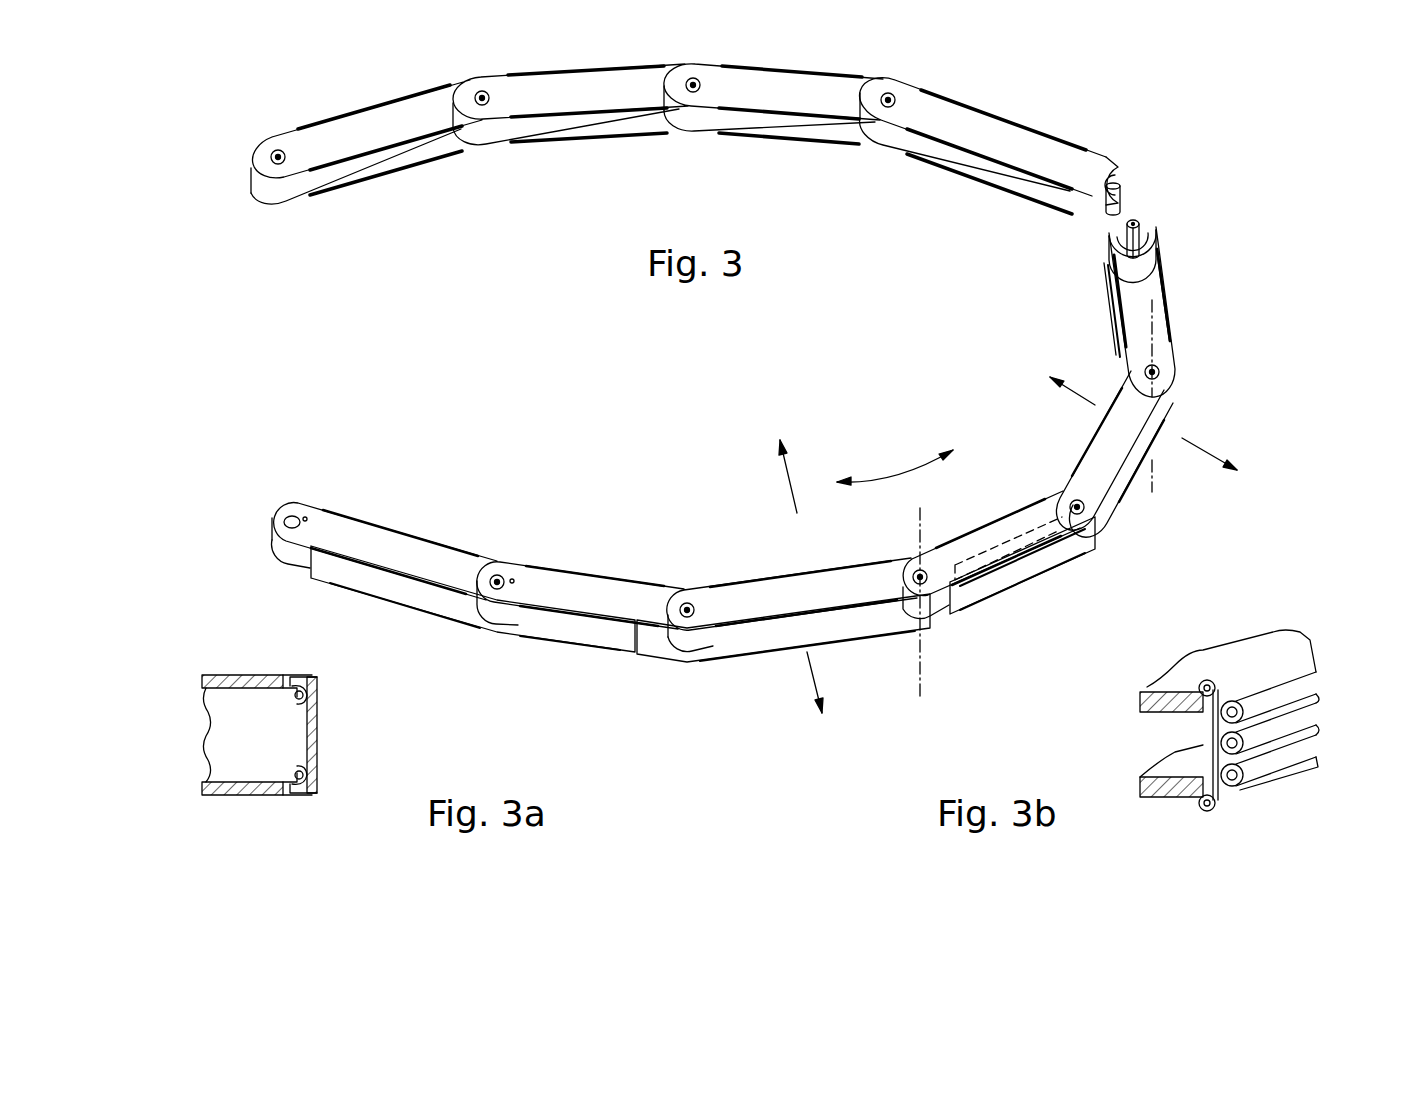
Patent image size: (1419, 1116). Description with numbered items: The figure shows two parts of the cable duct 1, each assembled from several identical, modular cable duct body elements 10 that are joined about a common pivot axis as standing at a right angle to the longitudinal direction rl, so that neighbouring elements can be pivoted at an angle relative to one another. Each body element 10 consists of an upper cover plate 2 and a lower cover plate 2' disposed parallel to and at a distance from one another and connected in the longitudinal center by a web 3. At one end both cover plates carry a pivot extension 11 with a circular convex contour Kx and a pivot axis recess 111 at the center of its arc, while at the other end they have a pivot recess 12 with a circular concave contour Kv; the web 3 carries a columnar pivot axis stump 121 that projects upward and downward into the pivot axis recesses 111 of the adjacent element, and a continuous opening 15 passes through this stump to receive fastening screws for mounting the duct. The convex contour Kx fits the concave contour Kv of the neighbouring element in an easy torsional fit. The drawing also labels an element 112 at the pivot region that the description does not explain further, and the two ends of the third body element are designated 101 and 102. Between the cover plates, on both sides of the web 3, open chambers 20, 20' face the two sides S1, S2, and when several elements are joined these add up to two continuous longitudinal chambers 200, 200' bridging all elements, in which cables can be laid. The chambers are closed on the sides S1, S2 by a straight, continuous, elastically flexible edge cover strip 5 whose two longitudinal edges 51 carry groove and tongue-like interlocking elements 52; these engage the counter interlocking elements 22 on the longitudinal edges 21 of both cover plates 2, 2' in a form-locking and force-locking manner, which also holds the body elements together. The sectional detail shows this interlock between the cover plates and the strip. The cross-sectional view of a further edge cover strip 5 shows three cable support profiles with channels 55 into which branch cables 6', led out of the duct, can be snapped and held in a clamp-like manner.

In FIG. 3, the cable duct 1 is at (588, 152).
In FIG. 3, the upper cover plate 2 is at (993, 137).
In FIG. 3A, the upper cover plate 2 is at (257, 658).
In FIG. 3B, the upper cover plate 2 is at (1137, 692).
In FIG. 3, the lower cover plate 2' is at (853, 440).
In FIG. 3A, the lower cover plate 2' is at (254, 810).
In FIG. 3, the web 3 is at (1140, 252).
In FIG. 3, the edge cover strip 5 is at (458, 602).
In FIG. 3A, the edge cover strip 5 is at (317, 738).
In FIG. 3B, the edge cover strip 5 is at (1237, 788).
In FIG. 3B, the branch cable 6' is at (1258, 704).
In FIG. 3, the cable duct body element 10 is at (785, 97).
In FIG. 3A, the cable duct body element 10 is at (215, 682).
In FIG. 3, the pivot extension 11 is at (877, 92).
In FIG. 3, the pivot recess 12 is at (1100, 168).
In FIG. 3, the continuous opening 15 is at (307, 520).
In FIG. 3, the chamber 20 is at (960, 545).
In FIG. 3, the chamber 20' is at (1090, 309).
In FIG. 3, the longitudinal edge 21 is at (933, 565).
In FIG. 3, the counter interlocking element 22 is at (817, 572).
In FIG. 3A, the counter interlocking element 22 is at (297, 693).
In FIG. 3B, the counter interlocking element 22 is at (1202, 695).
In FIG. 3, the longitudinal edge 51 is at (542, 633).
In FIG. 3A, the longitudinal edge 51 is at (313, 690).
In FIG. 3, the interlocking element 52 is at (567, 607).
In FIG. 3A, the interlocking element 52 is at (300, 710).
In FIG. 3B, the interlocking element 52 is at (1210, 690).
In FIG. 3B, the channel 55 is at (1300, 755).
In FIG. 3, the end of body element 101 is at (668, 600).
In FIG. 3, the end of body element 102 is at (893, 562).
In FIG. 3, the pivot axis recess 111 is at (890, 108).
In FIG. 3, the pivot pin head 112 is at (708, 595).
In FIG. 3, the pivot axis stump 121 is at (1137, 228).
In FIG. 3, the longitudinal chamber 200 is at (892, 607).
In FIG. 3, the longitudinal chamber 200' is at (1052, 394).
In FIG. 3, the circular convex contour Kx is at (870, 85).
In FIG. 3, the circular concave contour Kv is at (1118, 188).
In FIG. 3, the side S1 is at (1022, 571).
In FIG. 3, the side S2 is at (937, 432).
In FIG. 3, the longitudinal direction rl is at (895, 464).
In FIG. 3, the pivot axis as is at (1042, 500).